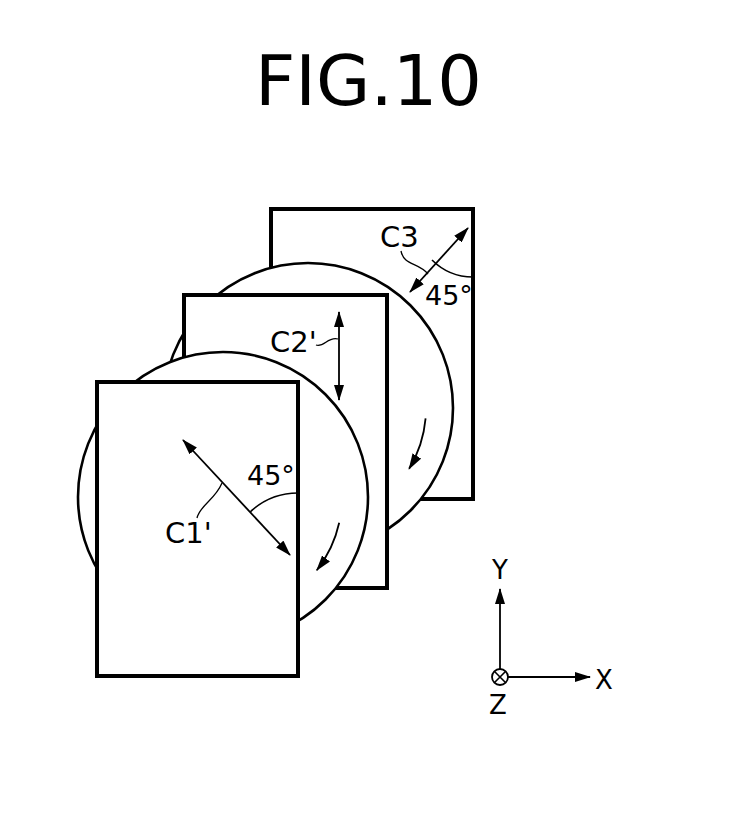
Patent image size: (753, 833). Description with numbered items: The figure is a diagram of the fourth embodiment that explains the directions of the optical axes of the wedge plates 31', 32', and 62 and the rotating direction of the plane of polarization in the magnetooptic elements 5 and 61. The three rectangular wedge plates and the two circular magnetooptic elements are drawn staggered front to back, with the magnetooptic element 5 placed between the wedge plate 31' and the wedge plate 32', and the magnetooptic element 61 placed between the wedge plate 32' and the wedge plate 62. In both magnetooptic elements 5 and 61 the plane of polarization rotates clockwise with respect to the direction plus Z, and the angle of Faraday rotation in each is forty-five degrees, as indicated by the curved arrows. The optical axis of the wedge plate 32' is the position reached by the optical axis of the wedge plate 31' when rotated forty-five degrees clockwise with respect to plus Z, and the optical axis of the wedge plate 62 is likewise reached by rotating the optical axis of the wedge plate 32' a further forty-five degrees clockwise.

The wedge plate 31' is at (197, 565).
The wedge plate 32' is at (305, 475).
The magnetooptic element 5 is at (318, 611).
The magnetooptic element 61 is at (405, 517).
The wedge plate 62 is at (473, 432).